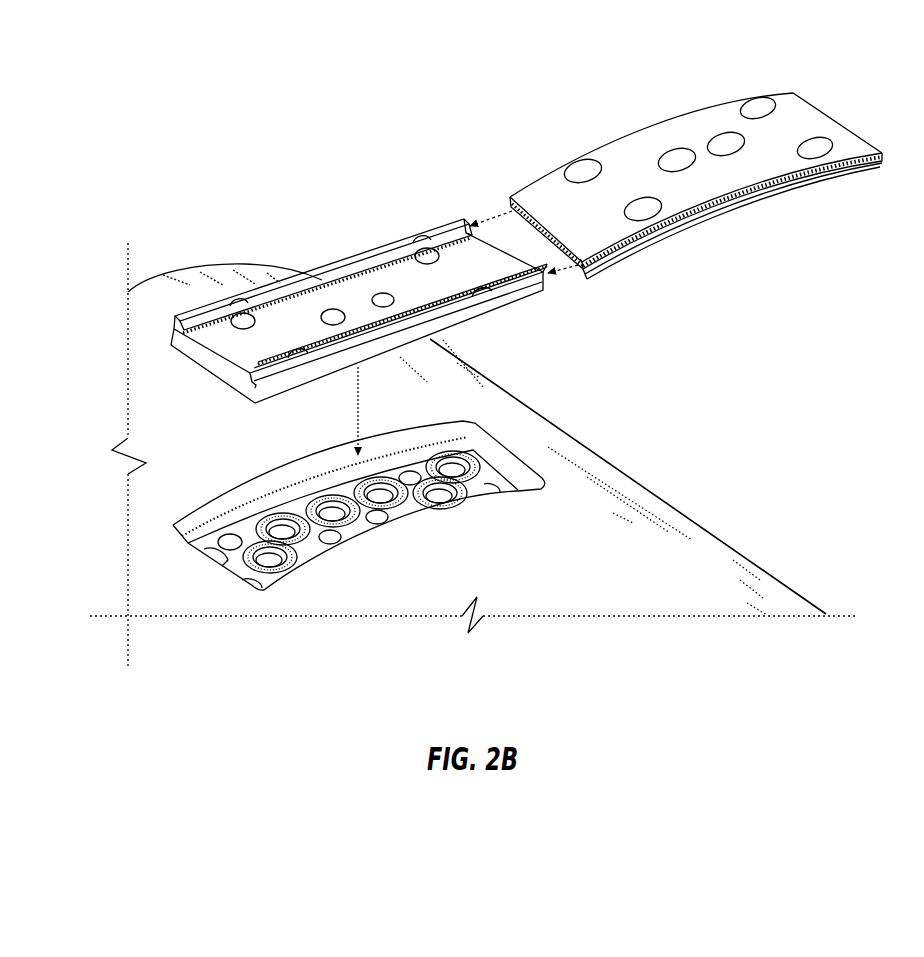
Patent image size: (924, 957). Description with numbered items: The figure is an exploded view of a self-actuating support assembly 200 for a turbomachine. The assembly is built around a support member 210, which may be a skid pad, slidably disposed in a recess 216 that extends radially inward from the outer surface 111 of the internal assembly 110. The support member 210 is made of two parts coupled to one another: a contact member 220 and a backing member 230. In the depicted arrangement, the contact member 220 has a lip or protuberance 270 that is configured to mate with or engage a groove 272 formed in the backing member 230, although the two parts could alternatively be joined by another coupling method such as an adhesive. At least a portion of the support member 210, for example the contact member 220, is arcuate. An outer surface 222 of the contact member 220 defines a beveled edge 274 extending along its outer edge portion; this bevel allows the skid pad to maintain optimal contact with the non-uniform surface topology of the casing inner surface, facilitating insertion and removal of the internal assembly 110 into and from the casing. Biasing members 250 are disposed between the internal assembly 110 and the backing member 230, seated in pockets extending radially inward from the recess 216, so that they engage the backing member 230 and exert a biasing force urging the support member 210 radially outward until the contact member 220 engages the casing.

The self-actuating support assembly 200 is at (205, 90).
The internal assembly 110 is at (729, 543).
The outer surface 111 is at (666, 506).
The recess 216 is at (522, 474).
The biasing members 250 is at (478, 466).
The support member 210 is at (466, 206).
The groove 272 is at (252, 386).
The backing member 230 is at (546, 285).
The contact member 220 is at (833, 122).
The outer surface 222 is at (660, 131).
The beveled edge 274 is at (756, 182).
The protuberance 270 is at (585, 268).